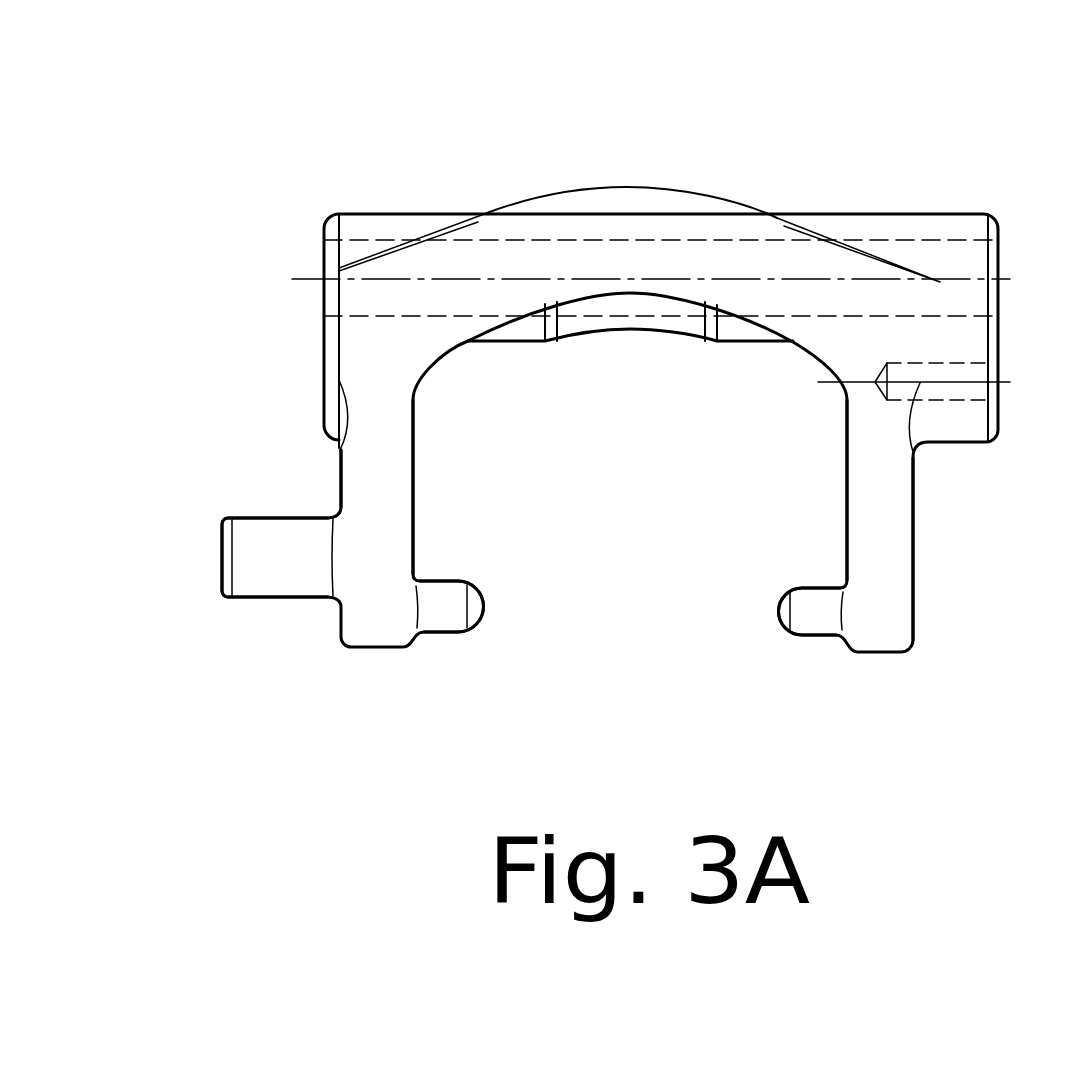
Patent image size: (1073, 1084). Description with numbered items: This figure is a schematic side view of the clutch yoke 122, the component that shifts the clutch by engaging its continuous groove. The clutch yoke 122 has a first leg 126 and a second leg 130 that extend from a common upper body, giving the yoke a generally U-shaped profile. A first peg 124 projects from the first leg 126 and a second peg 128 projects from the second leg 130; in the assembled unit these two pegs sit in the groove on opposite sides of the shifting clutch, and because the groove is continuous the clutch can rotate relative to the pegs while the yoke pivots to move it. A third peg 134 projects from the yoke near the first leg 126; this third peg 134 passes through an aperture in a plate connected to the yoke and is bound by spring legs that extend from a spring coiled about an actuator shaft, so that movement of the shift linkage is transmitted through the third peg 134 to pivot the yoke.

The clutch yoke 122 is at (655, 202).
The first peg 124 is at (433, 615).
The first leg 126 is at (373, 477).
The second peg 128 is at (818, 618).
The second leg 130 is at (902, 495).
The third peg 134 is at (283, 563).